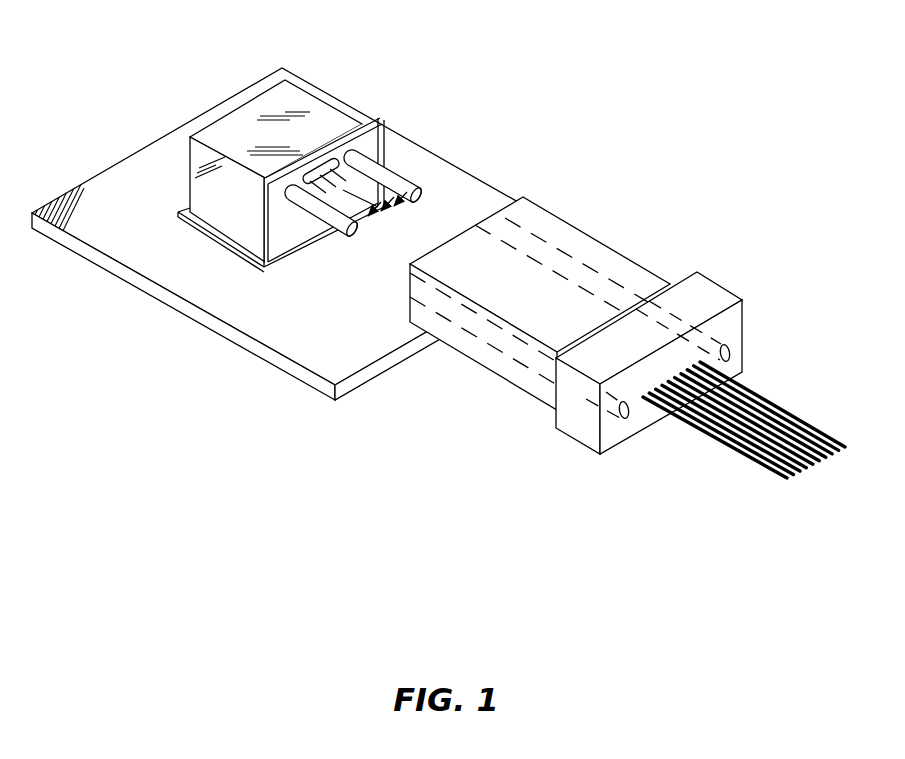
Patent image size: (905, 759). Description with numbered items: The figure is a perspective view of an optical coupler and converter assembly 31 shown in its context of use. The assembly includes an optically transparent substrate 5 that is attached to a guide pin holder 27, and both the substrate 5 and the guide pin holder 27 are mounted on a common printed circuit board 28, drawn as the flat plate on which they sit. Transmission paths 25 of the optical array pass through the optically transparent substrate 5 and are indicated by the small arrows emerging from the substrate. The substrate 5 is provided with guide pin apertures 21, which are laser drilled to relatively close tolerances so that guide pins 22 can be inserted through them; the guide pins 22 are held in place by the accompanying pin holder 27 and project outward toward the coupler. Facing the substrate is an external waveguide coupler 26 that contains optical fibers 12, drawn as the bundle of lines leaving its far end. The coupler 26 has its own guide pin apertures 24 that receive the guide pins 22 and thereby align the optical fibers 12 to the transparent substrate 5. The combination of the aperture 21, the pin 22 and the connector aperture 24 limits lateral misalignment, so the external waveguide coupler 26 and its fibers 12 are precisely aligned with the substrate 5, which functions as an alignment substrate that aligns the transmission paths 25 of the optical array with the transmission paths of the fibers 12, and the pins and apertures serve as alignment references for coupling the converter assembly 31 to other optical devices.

The optically transparent substrate 5 is at (218, 243).
The optical fibers 12 is at (762, 467).
The guide pin apertures 21 is at (343, 137).
The guide pins 22 is at (335, 242).
The guide pin apertures 24 is at (733, 353).
The transmission paths 25 is at (414, 223).
The external waveguide coupler 26 is at (533, 395).
The guide pin holder 27 is at (238, 103).
The printed circuit board 28 is at (380, 377).
The optical coupler and converter assembly 31 is at (547, 48).